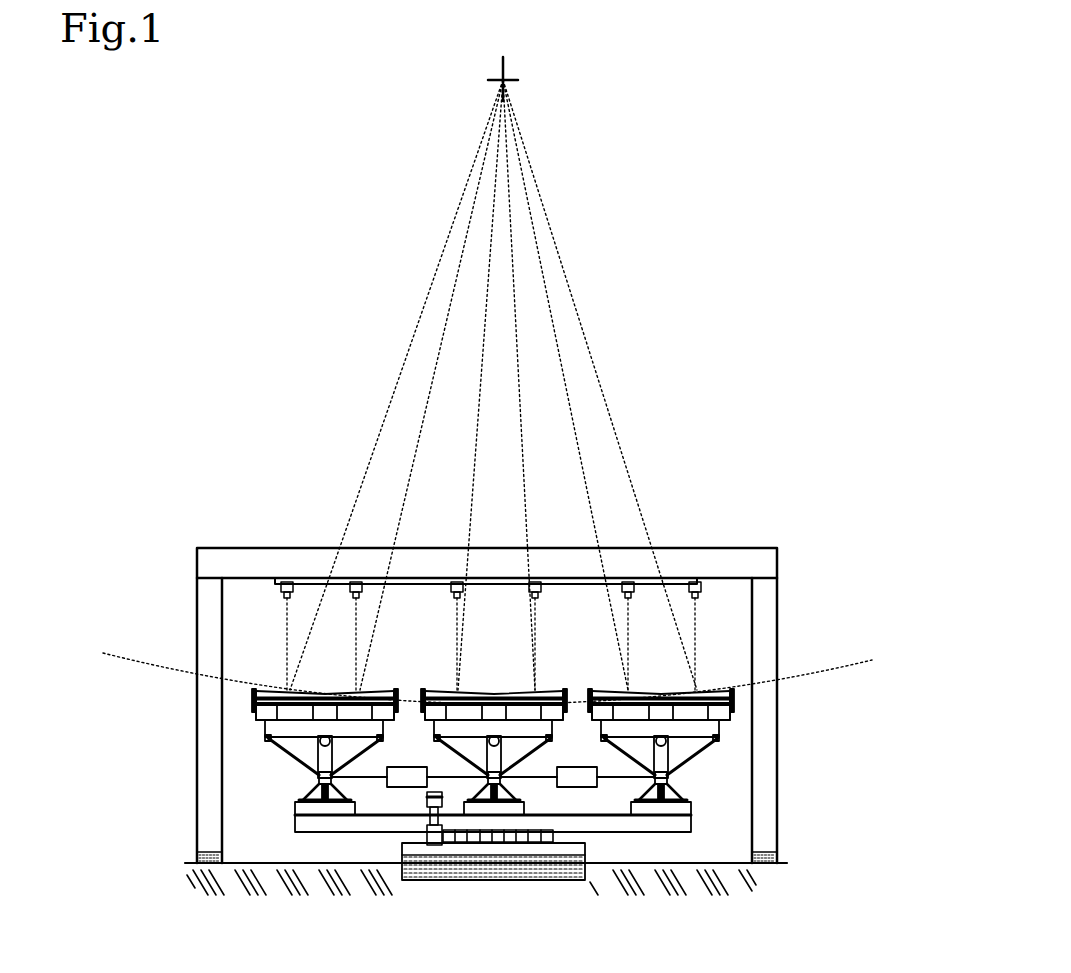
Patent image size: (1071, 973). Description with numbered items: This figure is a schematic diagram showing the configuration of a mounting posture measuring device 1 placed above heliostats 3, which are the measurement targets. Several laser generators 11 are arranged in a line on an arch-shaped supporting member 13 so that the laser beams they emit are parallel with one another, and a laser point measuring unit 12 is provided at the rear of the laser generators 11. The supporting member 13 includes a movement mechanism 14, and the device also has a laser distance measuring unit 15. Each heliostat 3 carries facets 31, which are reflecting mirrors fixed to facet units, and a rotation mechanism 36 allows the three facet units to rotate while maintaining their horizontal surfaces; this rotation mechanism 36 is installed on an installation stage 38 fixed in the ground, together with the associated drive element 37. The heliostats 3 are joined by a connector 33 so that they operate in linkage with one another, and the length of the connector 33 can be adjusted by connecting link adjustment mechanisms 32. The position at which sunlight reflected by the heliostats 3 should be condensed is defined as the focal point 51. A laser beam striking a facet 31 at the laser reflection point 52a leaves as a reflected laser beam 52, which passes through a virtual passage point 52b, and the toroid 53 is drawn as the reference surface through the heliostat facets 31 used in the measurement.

The mounting posture measuring device 1 is at (688, 463).
The heliostat 3 is at (680, 843).
The laser generator 11 is at (285, 582).
The laser point measuring unit 12 is at (402, 582).
The supporting member 13 is at (205, 550).
The movement mechanism 14 is at (779, 862).
The laser distance measuring unit 15 is at (199, 823).
The facet 31 is at (715, 690).
The connecting link adjustment mechanism 32 is at (398, 786).
The connector 33 is at (299, 760).
The rotation mechanism 36 is at (556, 840).
The drive motor 37 is at (434, 846).
The installation stage 38 is at (522, 900).
The focal point 51 is at (506, 80).
The reflected laser beam 52 is at (524, 150).
The laser reflection point 52a is at (289, 690).
The virtual passage point 52b is at (661, 571).
The toroid 53 is at (829, 670).